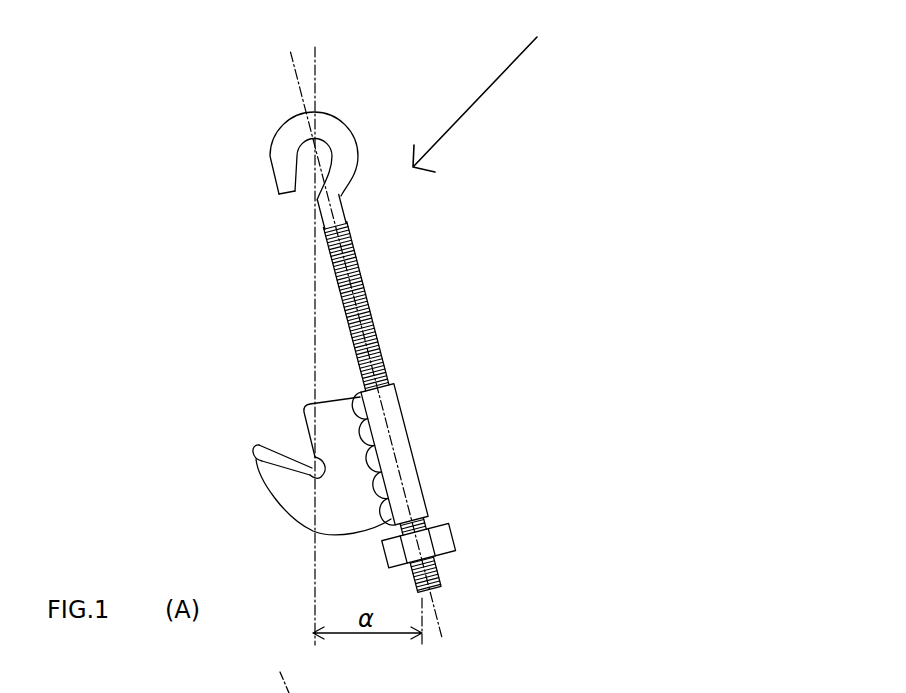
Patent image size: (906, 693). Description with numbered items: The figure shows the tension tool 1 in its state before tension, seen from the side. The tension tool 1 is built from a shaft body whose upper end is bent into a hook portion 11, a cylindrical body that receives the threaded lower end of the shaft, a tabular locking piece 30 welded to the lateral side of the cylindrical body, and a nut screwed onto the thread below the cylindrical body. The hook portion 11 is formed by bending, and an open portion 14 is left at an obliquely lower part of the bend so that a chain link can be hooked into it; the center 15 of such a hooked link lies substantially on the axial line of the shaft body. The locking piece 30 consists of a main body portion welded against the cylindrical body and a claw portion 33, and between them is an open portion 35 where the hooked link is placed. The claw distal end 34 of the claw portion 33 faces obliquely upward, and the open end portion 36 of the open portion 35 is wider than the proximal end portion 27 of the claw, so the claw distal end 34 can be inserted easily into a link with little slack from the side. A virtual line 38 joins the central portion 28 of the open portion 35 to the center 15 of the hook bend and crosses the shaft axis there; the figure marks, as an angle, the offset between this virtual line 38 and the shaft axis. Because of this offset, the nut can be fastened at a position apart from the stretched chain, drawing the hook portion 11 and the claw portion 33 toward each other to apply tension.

The tension tool 1 is at (491, 86).
The hook portion 11 is at (338, 130).
The open portion 14 is at (306, 196).
The center 15 is at (312, 152).
The proximal end portion 27 is at (328, 465).
The central portion 28 is at (313, 465).
The locking piece 30 is at (337, 497).
The claw portion 33 is at (279, 485).
The claw distal end 34 is at (263, 457).
The open portion 35 is at (308, 460).
The open end portion 36 is at (282, 428).
The virtual line 38 is at (310, 568).